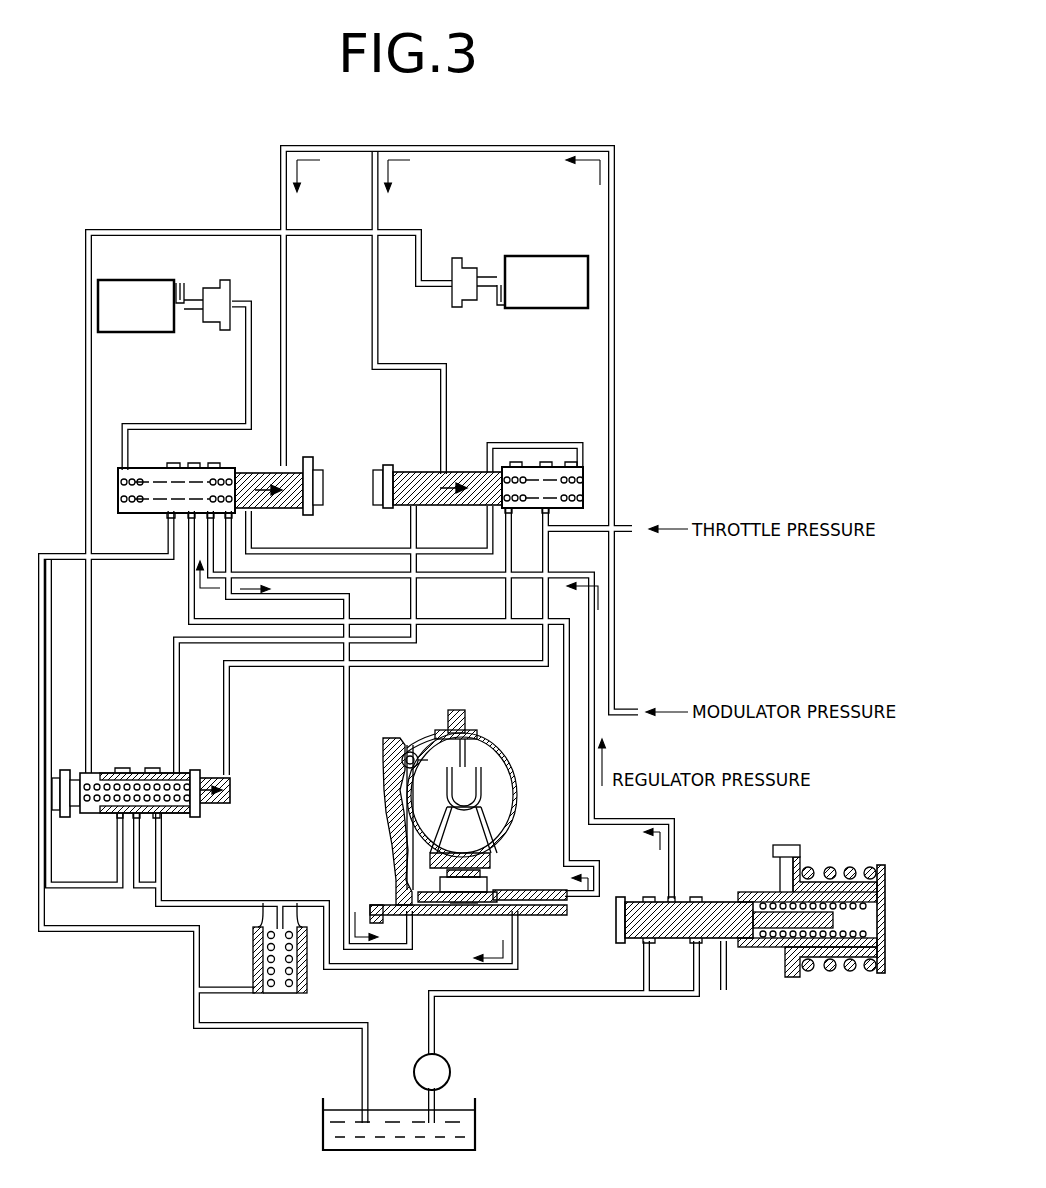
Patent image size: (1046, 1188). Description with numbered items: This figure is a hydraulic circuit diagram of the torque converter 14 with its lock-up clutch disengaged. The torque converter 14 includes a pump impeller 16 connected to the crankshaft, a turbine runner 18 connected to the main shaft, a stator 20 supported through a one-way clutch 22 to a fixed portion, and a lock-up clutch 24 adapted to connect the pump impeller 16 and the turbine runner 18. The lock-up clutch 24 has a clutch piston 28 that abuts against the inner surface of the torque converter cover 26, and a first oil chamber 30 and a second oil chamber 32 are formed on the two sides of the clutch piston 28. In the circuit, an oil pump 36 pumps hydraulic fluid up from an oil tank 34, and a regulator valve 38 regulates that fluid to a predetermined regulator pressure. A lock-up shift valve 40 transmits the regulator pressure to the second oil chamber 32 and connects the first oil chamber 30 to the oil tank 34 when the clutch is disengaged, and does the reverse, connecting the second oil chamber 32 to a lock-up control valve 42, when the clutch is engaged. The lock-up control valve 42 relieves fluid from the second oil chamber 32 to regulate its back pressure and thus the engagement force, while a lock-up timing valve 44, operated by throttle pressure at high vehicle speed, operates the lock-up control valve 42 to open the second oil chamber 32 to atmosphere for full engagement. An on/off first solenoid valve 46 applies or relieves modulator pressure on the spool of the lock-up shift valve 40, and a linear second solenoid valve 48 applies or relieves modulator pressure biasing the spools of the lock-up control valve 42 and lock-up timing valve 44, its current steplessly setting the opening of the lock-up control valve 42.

The torque converter 14 is at (432, 813).
The pump impeller 16 is at (500, 790).
The turbine runner 18 is at (440, 745).
The stator 20 is at (470, 830).
The one-way clutch 22 is at (462, 906).
The lock-up clutch 24 is at (402, 742).
The torque converter cover 26 is at (395, 826).
The clutch piston 28 is at (398, 788).
The first oil chamber 30 is at (410, 847).
The second oil chamber 32 is at (400, 800).
The oil tank 34 is at (476, 1124).
The oil pump 36 is at (452, 1068).
The regulator valve 38 is at (820, 856).
The lock-up shift valve 40 is at (178, 452).
The lock-up control valve 42 is at (468, 446).
The lock-up timing valve 44 is at (118, 762).
The first solenoid valve 46 is at (130, 280).
The second solenoid valve 48 is at (520, 256).